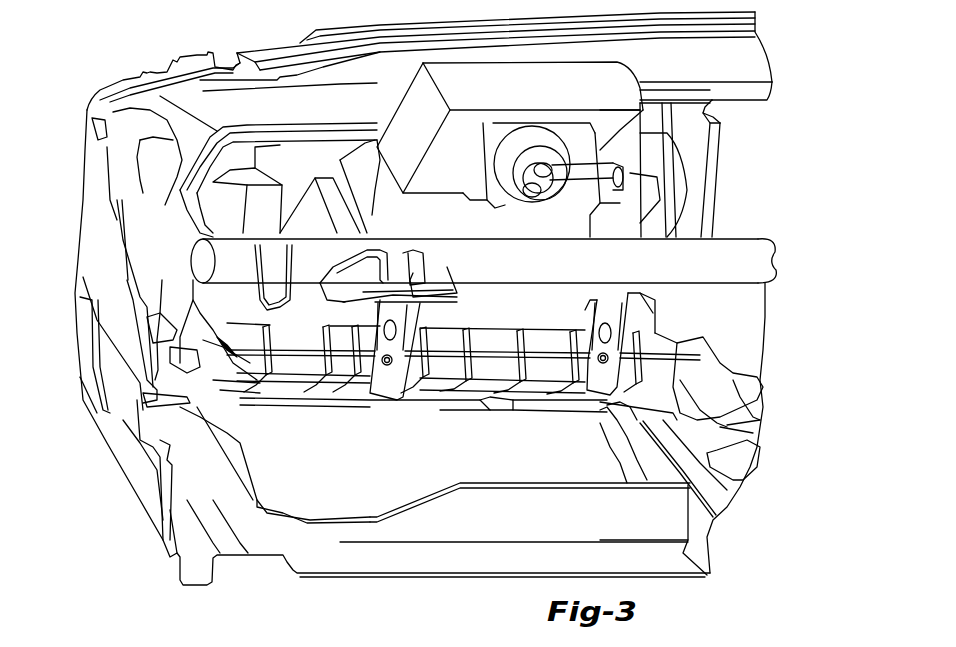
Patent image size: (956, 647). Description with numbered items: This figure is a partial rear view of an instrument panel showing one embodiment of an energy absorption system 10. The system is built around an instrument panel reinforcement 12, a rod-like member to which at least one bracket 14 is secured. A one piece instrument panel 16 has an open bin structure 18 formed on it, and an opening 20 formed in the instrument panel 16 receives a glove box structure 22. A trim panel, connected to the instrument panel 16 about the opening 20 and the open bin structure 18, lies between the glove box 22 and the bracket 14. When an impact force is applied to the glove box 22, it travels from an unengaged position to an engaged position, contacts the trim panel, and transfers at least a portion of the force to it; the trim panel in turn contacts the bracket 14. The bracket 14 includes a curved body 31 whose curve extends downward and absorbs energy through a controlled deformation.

The energy absorption system 10 is at (115, 64).
The instrument panel reinforcement 12 is at (738, 238).
The bracket 14 is at (420, 310).
The instrument panel 16 is at (723, 147).
The open bin structure 18 is at (507, 327).
The opening 20 is at (371, 470).
The glove box structure 22 is at (532, 149).
The curved body 31 is at (377, 320).